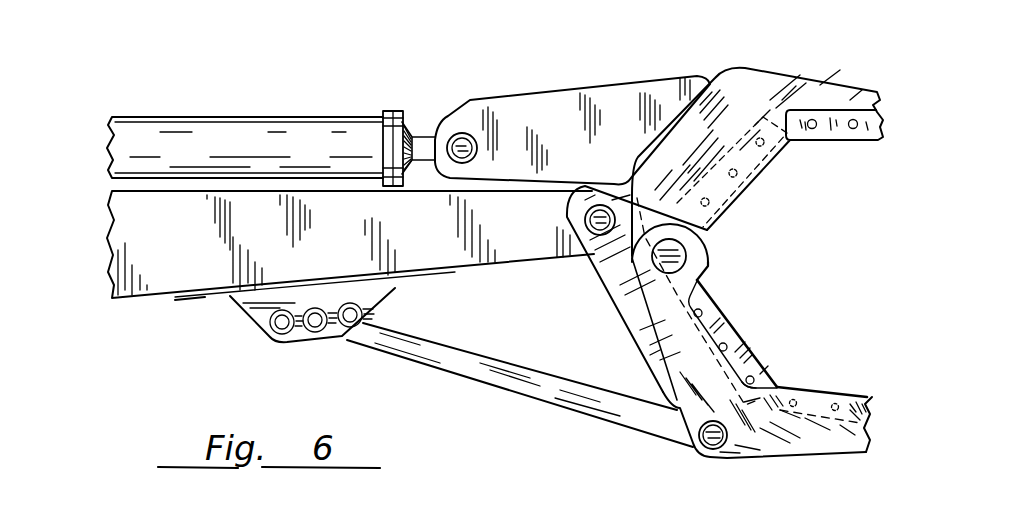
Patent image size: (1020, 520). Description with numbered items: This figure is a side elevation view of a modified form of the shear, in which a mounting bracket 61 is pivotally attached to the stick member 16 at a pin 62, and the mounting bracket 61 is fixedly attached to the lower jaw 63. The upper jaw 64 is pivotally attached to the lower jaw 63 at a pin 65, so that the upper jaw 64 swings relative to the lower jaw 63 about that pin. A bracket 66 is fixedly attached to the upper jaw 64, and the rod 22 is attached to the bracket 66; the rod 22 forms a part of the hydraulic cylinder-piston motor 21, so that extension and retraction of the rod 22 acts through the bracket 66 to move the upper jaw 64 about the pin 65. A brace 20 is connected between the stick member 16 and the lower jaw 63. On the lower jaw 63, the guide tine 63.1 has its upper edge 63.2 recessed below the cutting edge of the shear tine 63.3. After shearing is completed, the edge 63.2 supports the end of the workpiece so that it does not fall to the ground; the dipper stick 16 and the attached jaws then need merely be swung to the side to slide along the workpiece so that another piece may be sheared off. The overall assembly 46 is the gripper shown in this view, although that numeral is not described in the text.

The gripper assembly 46 is at (557, 5).
The hydraulic cylinder-piston motor 21 is at (203, 140).
The rod 22 is at (422, 140).
The bracket 66 is at (562, 110).
The upper jaw 64 is at (830, 93).
The stick member 16 is at (350, 266).
The pin 62 is at (588, 216).
The pin 65 is at (688, 253).
The mounting bracket 61 is at (622, 292).
The lower jaw 63 is at (833, 437).
The shear tine 63.3 is at (722, 325).
The upper edge 63.2 is at (745, 372).
The guide tine 63.1 is at (823, 398).
The brace 20 is at (447, 358).